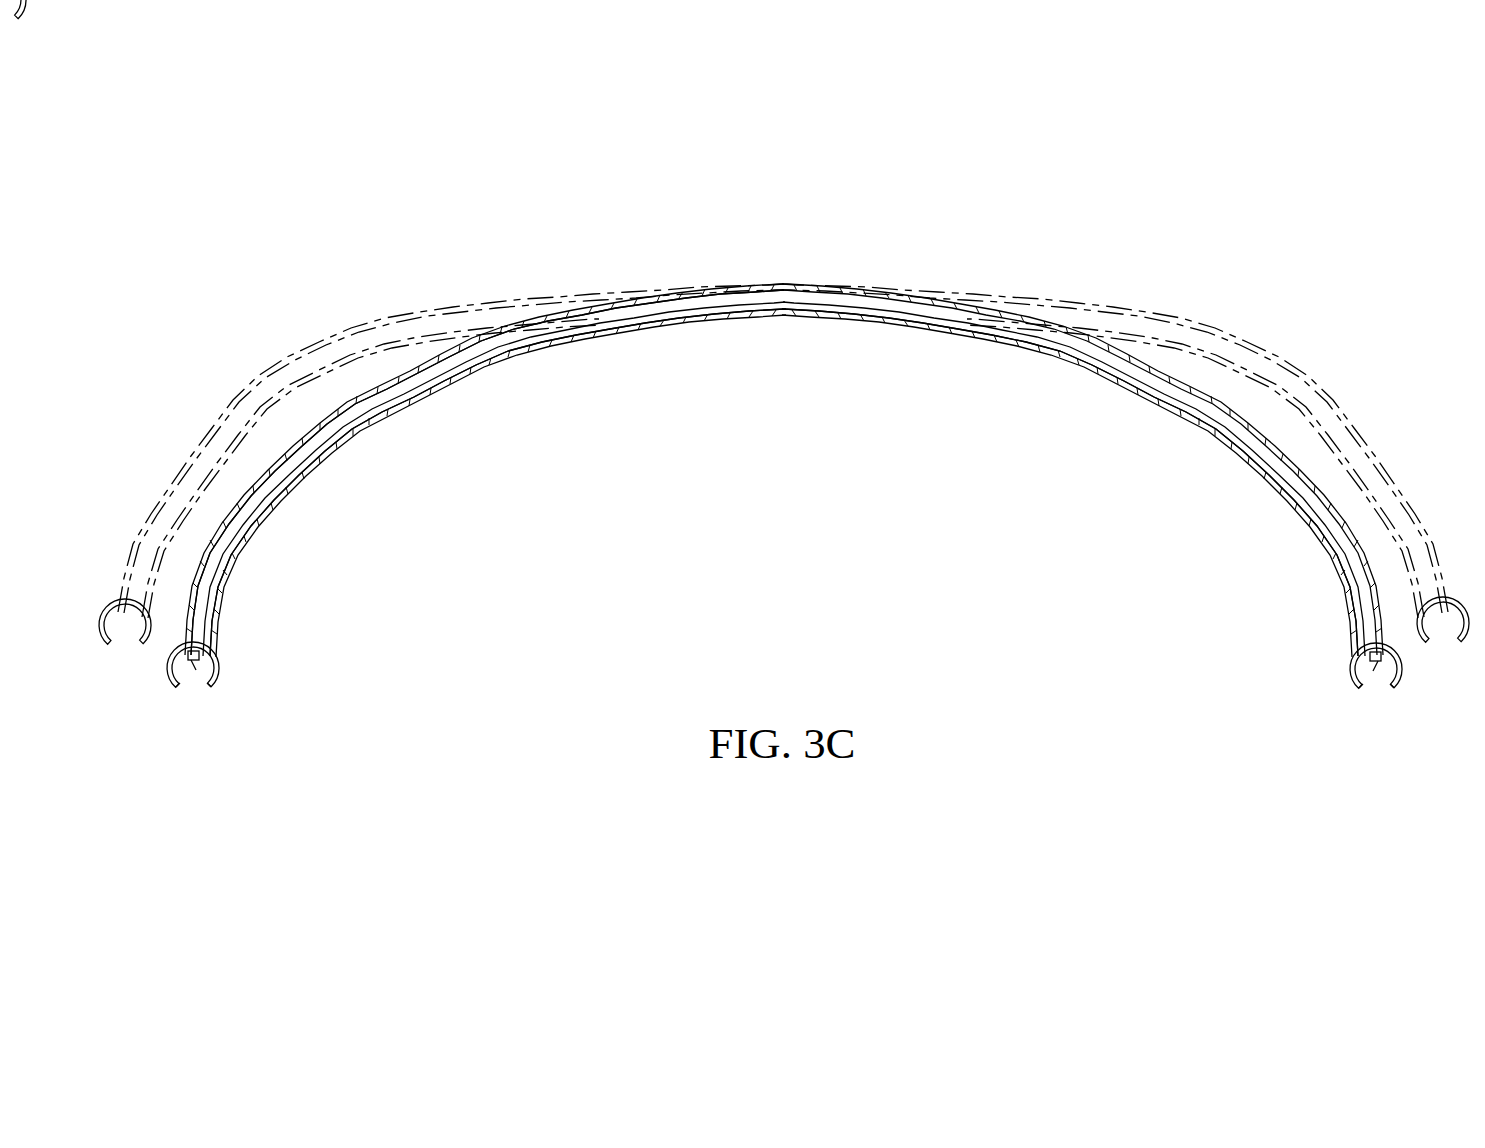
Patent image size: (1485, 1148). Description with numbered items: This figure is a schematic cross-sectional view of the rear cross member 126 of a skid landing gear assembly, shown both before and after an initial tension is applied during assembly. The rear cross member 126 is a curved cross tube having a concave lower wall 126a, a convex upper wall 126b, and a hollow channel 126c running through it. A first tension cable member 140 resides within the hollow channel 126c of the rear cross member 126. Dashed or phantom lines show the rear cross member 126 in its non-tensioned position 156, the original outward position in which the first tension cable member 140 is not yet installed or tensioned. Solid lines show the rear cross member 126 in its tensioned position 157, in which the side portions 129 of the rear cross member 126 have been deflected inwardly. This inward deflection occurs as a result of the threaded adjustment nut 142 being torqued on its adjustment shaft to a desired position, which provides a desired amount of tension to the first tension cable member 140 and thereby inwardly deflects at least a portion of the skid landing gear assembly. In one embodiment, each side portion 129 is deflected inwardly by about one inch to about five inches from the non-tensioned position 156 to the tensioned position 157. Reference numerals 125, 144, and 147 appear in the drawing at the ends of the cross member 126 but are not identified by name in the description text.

The end clips 125 is at (148, 642).
The rear cross member 126 is at (858, 286).
The concave lower wall 126a is at (857, 317).
The convex upper wall 126b is at (782, 283).
The hollow channel 126c is at (707, 303).
The side portion 129 is at (165, 489).
The first tension cable member 140 is at (622, 316).
The threaded adjustment nut 142 is at (1373, 673).
The left pin 144 is at (195, 673).
The clip opening 147 is at (200, 697).
The non-tensioned position 156 is at (376, 321).
The tensioned position 157 is at (331, 452).